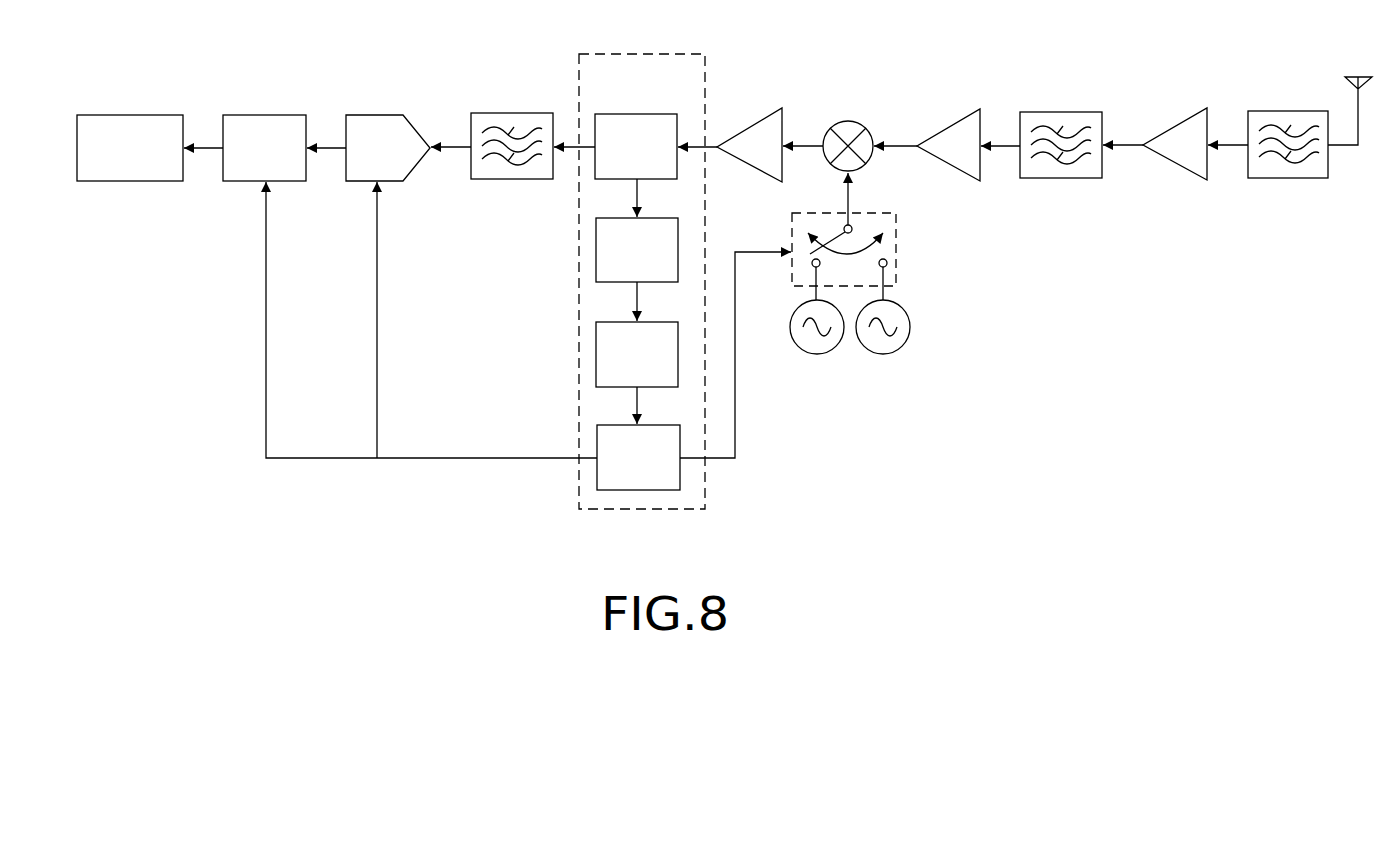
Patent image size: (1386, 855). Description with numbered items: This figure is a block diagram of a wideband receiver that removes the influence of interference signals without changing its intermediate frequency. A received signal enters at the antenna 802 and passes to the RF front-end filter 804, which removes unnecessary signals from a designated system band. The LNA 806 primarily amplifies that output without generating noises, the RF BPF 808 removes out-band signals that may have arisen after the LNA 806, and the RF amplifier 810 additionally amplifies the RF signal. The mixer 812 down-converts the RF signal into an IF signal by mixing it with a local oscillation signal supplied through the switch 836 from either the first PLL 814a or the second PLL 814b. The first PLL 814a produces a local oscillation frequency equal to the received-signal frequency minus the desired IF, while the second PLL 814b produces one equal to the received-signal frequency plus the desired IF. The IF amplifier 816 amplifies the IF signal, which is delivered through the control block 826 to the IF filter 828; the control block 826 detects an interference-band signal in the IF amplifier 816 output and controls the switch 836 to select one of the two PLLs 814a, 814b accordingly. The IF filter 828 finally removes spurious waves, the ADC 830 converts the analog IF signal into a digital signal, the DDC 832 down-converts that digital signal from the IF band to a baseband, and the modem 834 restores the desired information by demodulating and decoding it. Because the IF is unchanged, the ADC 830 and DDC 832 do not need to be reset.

The antenna 802 is at (1357, 75).
The RF front-end filter 804 is at (1287, 110).
The LNA 806 is at (1171, 125).
The RF BPF 808 is at (1060, 110).
The RF amplifier 810 is at (943, 128).
The mixer 812 is at (847, 118).
The first PLL 814a is at (819, 389).
The second PLL 814b is at (887, 389).
The IF amplifier 816 is at (743, 126).
The control block 826 is at (639, 52).
The IF filter 828 is at (511, 112).
The ADC 830 is at (374, 113).
The DDC 832 is at (262, 113).
The modem 834 is at (129, 113).
The switch 836 is at (897, 249).